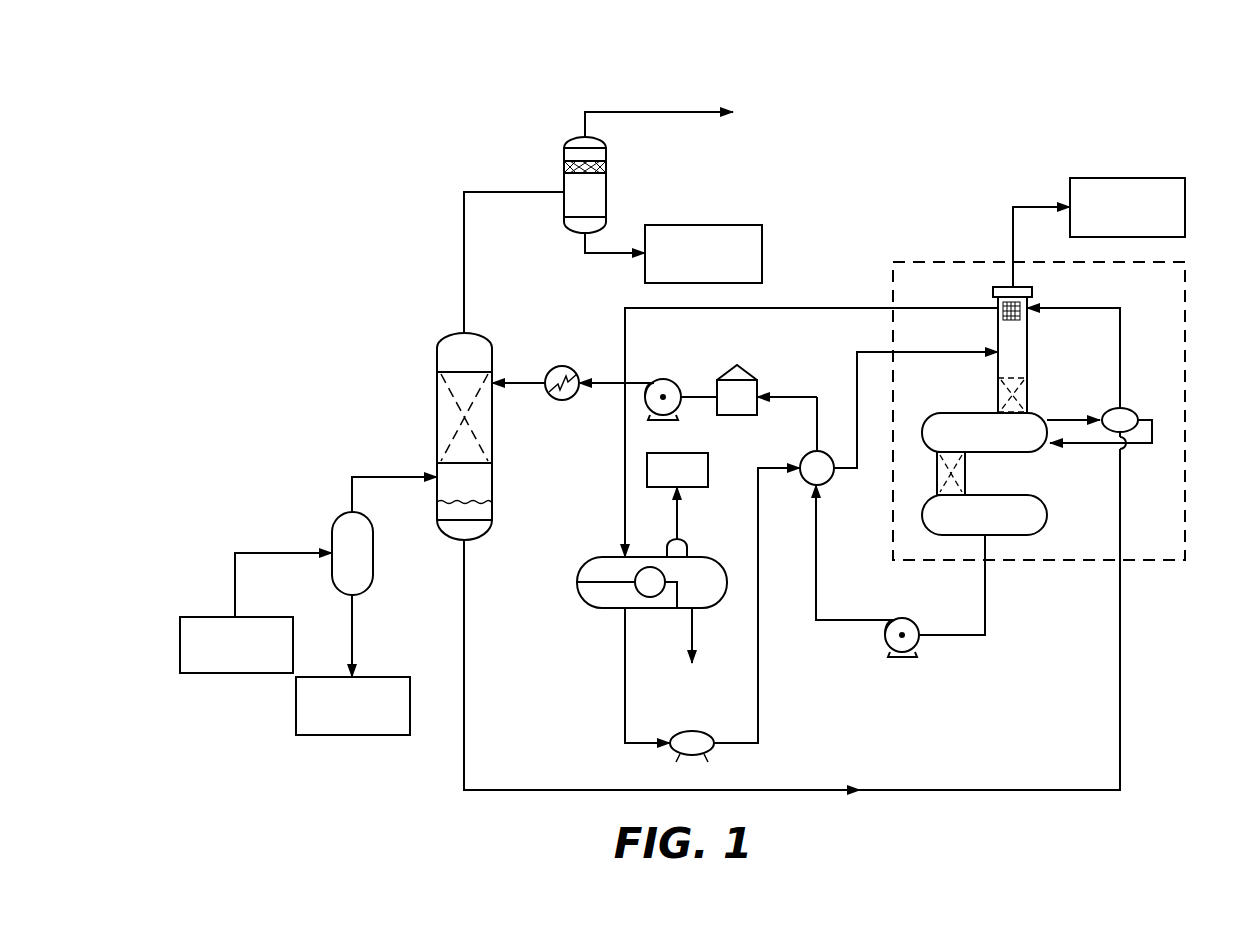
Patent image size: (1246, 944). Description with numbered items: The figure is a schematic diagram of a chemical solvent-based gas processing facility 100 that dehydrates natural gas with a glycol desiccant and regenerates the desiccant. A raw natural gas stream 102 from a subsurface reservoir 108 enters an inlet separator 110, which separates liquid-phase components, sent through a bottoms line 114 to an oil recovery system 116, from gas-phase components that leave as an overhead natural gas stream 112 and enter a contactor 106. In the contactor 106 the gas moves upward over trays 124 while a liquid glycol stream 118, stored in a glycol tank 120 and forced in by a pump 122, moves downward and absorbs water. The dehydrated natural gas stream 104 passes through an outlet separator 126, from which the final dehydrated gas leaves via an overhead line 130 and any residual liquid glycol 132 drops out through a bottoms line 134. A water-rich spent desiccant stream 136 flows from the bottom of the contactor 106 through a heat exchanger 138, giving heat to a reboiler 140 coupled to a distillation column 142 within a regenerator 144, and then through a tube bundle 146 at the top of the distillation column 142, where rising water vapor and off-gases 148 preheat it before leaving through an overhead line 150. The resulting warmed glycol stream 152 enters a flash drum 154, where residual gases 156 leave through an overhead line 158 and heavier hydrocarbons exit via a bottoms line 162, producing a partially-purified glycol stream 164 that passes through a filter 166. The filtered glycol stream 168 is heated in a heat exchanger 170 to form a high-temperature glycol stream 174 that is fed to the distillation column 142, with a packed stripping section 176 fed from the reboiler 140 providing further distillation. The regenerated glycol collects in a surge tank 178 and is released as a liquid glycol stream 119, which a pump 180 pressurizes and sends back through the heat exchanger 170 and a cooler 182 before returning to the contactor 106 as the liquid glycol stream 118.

The gas processing facility 100 is at (186, 96).
The raw natural gas stream 102 is at (270, 553).
The dehydrated natural gas stream 104 is at (507, 190).
The contactor 106 is at (437, 353).
The subsurface reservoir 108 is at (200, 617).
The inlet separator 110 is at (373, 541).
The overhead natural gas stream 112 is at (382, 477).
The bottoms line 114 is at (352, 630).
The oil recovery system 116 is at (318, 735).
The liquid glycol stream 118 is at (532, 383).
The liquid glycol stream 119 is at (985, 602).
The glycol tank 120 is at (745, 370).
The pump 122 is at (672, 380).
The trays 124 is at (492, 440).
The outlet separator 126 is at (564, 157).
The overhead line 130 is at (655, 112).
The residual liquid glycol 132 is at (722, 225).
The bottoms line 134 is at (598, 260).
The spent desiccant stream 136 is at (564, 790).
The heat exchanger 138 is at (1138, 410).
The reboiler 140 is at (956, 413).
The distillation column 142 is at (1027, 352).
The regenerator 144 is at (916, 262).
The tube bundle 146 is at (1000, 326).
The water vapor and off-gases 148 is at (1100, 178).
The overhead line 150 is at (1012, 230).
The warmed glycol stream 152 is at (840, 308).
The flash drum 154 is at (577, 565).
The residual gases 156 is at (708, 470).
The overhead line 158 is at (677, 526).
The bottoms line 162 is at (697, 617).
The partially-purified glycol stream 164 is at (625, 655).
The filter 166 is at (714, 752).
The filtered glycol stream 168 is at (758, 680).
The heat exchanger 170 is at (830, 480).
The high-temperature glycol stream 174 is at (870, 352).
The stripping section 176 is at (965, 475).
The surge tank 178 is at (1047, 508).
The pump 180 is at (912, 619).
The cooler 182 is at (576, 397).